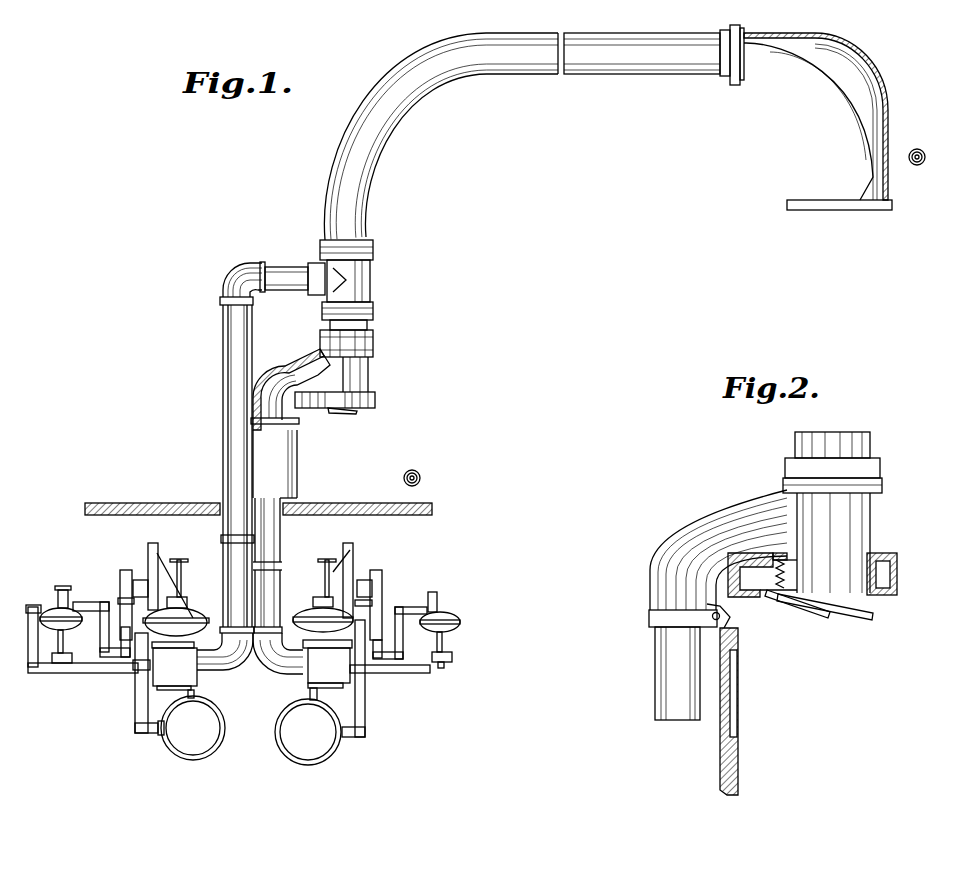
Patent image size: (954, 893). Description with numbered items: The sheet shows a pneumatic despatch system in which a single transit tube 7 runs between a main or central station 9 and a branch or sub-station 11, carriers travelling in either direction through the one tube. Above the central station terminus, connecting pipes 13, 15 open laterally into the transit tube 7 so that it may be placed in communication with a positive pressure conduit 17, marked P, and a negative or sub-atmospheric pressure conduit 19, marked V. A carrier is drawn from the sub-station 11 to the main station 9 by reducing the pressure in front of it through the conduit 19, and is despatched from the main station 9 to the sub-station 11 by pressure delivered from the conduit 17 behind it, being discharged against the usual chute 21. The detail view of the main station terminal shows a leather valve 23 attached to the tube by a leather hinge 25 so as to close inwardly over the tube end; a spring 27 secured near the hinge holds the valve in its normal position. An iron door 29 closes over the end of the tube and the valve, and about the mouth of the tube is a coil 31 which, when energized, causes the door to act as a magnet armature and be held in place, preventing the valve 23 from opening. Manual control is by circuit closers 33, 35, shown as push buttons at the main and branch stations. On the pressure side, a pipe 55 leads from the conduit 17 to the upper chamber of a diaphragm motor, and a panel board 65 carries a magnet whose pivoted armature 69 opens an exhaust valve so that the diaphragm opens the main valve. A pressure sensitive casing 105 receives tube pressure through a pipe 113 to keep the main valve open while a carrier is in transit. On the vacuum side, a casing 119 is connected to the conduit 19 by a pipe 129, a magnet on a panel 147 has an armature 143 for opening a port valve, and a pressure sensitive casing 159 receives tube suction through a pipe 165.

In FIG. 1, the transit tube 7 is at (382, 132).
In FIG. 2, the transit tube 7 is at (872, 442).
In FIG. 1, the main or central station 9 is at (130, 503).
In FIG. 1, the branch or sub-station 11 is at (808, 210).
In FIG. 1, the connecting pipe 13 is at (280, 530).
In FIG. 2, the connecting pipe 13 is at (660, 672).
In FIG. 1, the connecting pipe 15 is at (233, 463).
In FIG. 1, the pressure conduit 17 is at (335, 755).
In FIG. 1, the pressure conduit 19 is at (215, 752).
In FIG. 1, the chute 21 is at (830, 70).
In FIG. 1, the valve 23 is at (345, 414).
In FIG. 2, the valve 23 is at (866, 618).
In FIG. 2, the leather hinge 25 is at (808, 613).
In FIG. 2, the spring 27 is at (778, 555).
In FIG. 1, the door 29 is at (292, 448).
In FIG. 2, the door 29 is at (740, 748).
In FIG. 2, the coil 31 is at (897, 580).
In FIG. 1, the circuit closer 33 is at (420, 470).
In FIG. 1, the circuit closer 35 is at (933, 142).
In FIG. 1, the pipe 55 is at (365, 710).
In FIG. 1, the panel board 65 is at (353, 552).
In FIG. 1, the pivoted armature 69 is at (383, 580).
In FIG. 1, the casing 105 is at (450, 614).
In FIG. 1, the pipe 113 is at (403, 673).
In FIG. 1, the casing 119 is at (183, 615).
In FIG. 1, the pipe 129 is at (137, 715).
In FIG. 1, the armature 143 is at (120, 580).
In FIG. 1, the panel 147 is at (150, 550).
In FIG. 1, the casing 159 is at (48, 607).
In FIG. 1, the pipe 165 is at (85, 672).